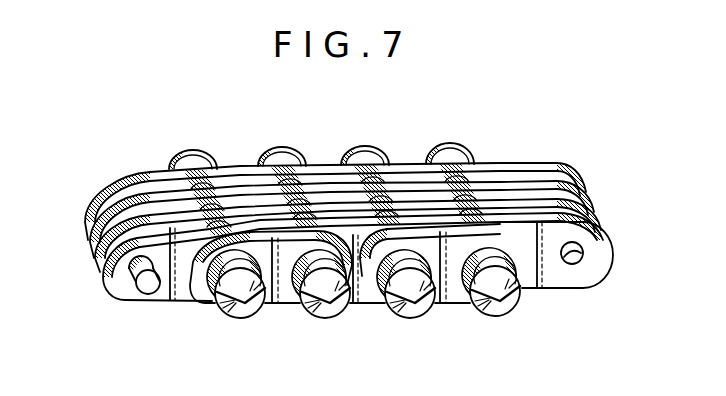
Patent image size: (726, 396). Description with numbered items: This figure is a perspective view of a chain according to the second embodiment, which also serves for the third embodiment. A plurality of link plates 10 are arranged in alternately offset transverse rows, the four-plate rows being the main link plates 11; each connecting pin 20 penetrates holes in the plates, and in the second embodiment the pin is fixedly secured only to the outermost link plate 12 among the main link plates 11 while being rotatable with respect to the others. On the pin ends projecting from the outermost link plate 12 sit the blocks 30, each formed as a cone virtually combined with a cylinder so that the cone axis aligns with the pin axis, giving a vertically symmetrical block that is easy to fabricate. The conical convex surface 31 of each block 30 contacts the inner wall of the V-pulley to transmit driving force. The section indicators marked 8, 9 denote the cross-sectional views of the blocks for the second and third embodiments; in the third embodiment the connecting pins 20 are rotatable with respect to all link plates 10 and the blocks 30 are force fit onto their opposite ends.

The link plates 10 is at (121, 176).
The main link plates 11 is at (265, 241).
The outermost link plate 12 is at (285, 305).
The connecting pin 20 is at (147, 294).
The block 30 is at (379, 296).
The convex surface 31 is at (406, 305).
The section line for FIG. 8 is at (433, 136).
The section line for FIG. 9 is at (514, 231).